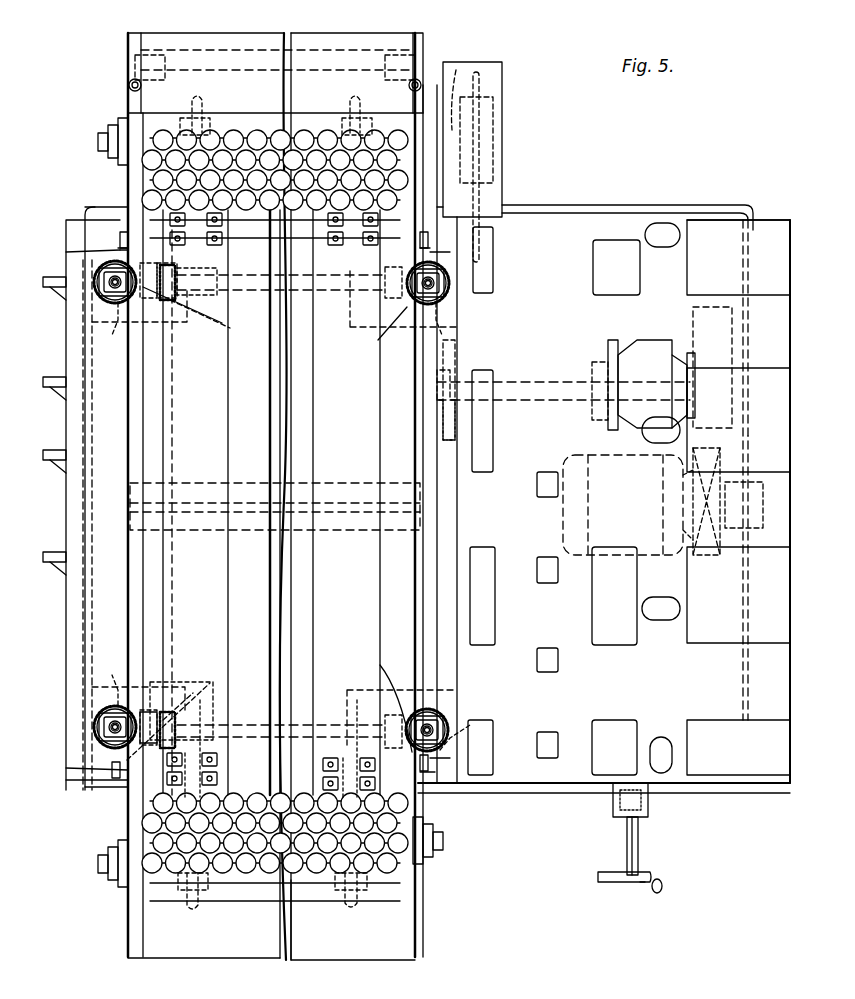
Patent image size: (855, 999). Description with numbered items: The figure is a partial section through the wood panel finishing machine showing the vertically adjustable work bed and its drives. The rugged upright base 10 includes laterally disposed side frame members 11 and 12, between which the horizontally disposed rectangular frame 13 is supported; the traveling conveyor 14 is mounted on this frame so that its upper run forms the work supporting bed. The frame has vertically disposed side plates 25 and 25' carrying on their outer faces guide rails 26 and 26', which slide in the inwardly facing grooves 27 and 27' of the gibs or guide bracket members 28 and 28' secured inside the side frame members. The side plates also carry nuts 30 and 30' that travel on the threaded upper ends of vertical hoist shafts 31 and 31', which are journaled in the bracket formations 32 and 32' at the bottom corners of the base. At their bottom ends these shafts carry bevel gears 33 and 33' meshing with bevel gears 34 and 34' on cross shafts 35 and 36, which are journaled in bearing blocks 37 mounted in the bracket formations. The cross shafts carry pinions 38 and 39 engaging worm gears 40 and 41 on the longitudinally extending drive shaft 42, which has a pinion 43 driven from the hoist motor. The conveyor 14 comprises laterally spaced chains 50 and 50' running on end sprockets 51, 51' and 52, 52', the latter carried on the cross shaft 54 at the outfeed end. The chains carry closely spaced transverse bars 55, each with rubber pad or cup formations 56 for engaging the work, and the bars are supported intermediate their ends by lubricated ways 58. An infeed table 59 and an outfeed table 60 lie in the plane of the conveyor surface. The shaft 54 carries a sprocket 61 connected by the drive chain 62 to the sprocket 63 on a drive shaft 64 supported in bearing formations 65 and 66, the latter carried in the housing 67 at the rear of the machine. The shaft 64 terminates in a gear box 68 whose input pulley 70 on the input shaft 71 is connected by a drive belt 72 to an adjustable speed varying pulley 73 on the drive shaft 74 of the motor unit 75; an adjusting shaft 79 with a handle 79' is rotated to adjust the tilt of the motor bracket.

The upright base 10 is at (62, 657).
The side frame member 11 is at (130, 752).
The side frame member 12 is at (470, 790).
The rectangular frame 13 is at (420, 922).
The traveling conveyor 14 is at (158, 875).
The side plate 25 is at (204, 584).
The side plate 25' is at (359, 502).
The guide rail 26 is at (248, 520).
The guide rail 26' is at (433, 786).
The groove 27 is at (279, 512).
The groove 27' is at (477, 746).
The guide bracket member 28 is at (258, 497).
The guide bracket member 28' is at (450, 800).
The nut 30 is at (84, 504).
The nut 30' is at (459, 506).
The hoist shaft 31 is at (75, 505).
The hoist shaft 31' is at (472, 506).
The bracket formation 32 is at (147, 512).
The bracket formation 32' is at (387, 506).
The bevel gear 33 is at (271, 504).
The bevel gear 33' is at (474, 715).
The bevel gear 34 is at (177, 523).
The bevel gear 34' is at (381, 529).
The cross shaft 35 is at (252, 730).
The cross shaft 36 is at (212, 297).
The bearing block 37 is at (130, 340).
The pinion 38 is at (175, 705).
The pinion 39 is at (180, 272).
The worm gear 40 is at (175, 718).
The worm gear 41 is at (214, 324).
The drive shaft 42 is at (172, 448).
The pinion 43 is at (145, 210).
The chain 50 is at (221, 748).
The chain 50' is at (321, 748).
The sprocket 51 is at (203, 905).
The sprocket 51' is at (337, 902).
The sprocket 52 is at (211, 109).
The sprocket 52' is at (341, 109).
The cross shaft 54 is at (462, 68).
The bar 55 is at (308, 207).
The pad formation 56 is at (260, 205).
The way 58 is at (306, 452).
The infeed table 59 is at (326, 958).
The outfeed table 60 is at (255, 40).
The sprocket 61 is at (482, 84).
The drive chain 62 is at (482, 232).
The sprocket 63 is at (480, 380).
The drive shaft 64 is at (543, 388).
The bearing formation 65 is at (446, 440).
The bearing formation 66 is at (592, 414).
The housing 67 is at (575, 232).
The gear box 68 is at (650, 345).
The input pulley 70 is at (708, 320).
The input shaft 71 is at (690, 355).
The drive belt 72 is at (748, 436).
The speed varying pulley 73 is at (722, 540).
The drive shaft 74 is at (690, 540).
The motor unit 75 is at (580, 517).
The adjusting shaft 79 is at (634, 838).
The handle 79' is at (660, 864).